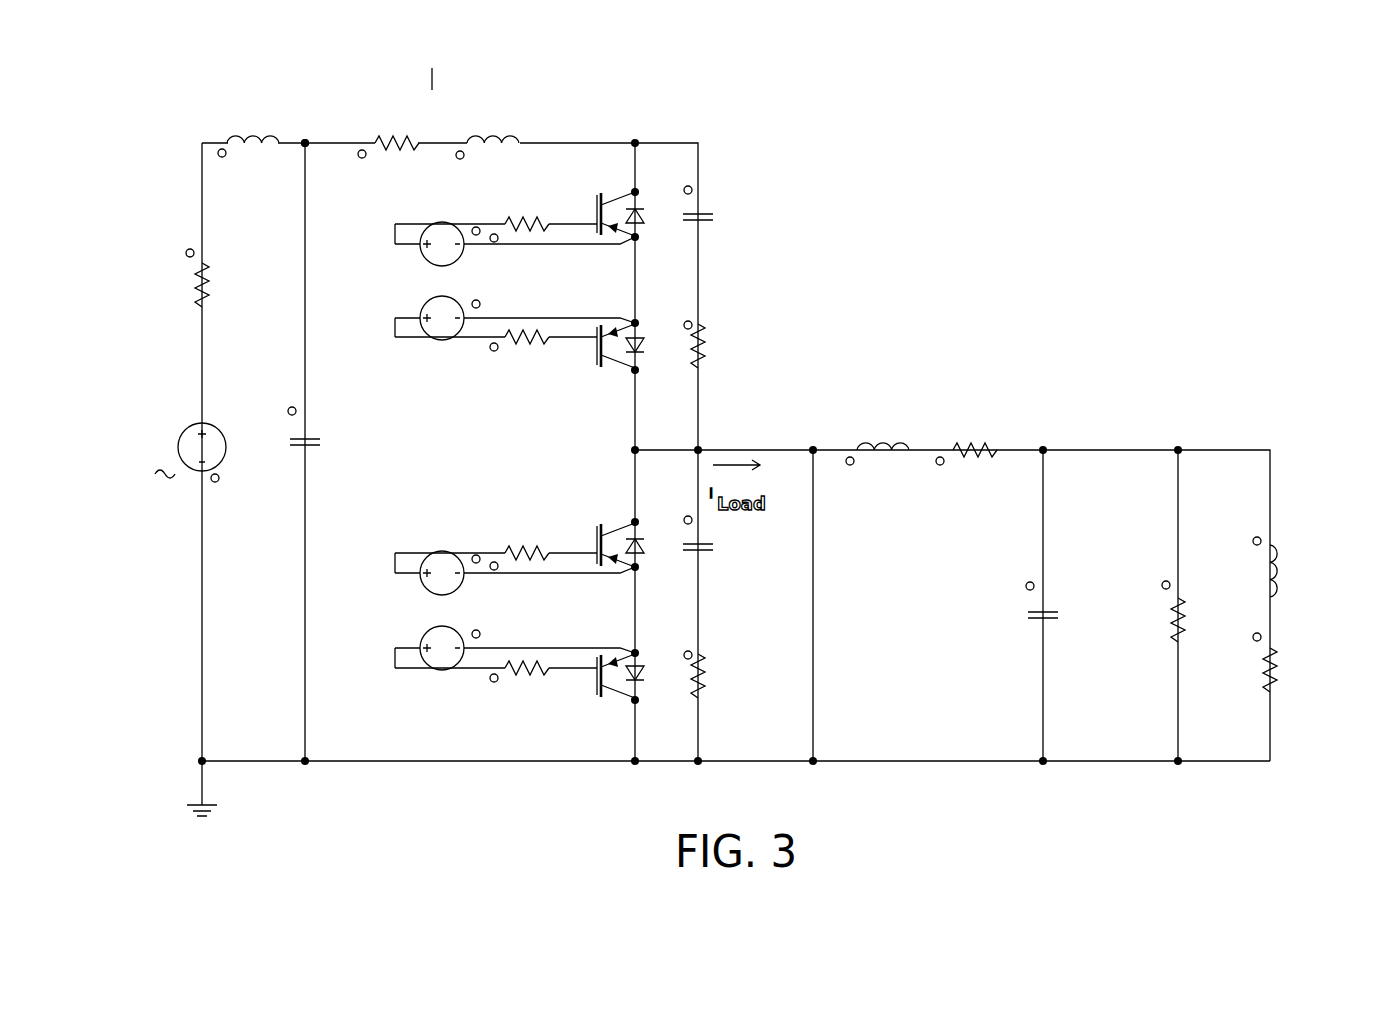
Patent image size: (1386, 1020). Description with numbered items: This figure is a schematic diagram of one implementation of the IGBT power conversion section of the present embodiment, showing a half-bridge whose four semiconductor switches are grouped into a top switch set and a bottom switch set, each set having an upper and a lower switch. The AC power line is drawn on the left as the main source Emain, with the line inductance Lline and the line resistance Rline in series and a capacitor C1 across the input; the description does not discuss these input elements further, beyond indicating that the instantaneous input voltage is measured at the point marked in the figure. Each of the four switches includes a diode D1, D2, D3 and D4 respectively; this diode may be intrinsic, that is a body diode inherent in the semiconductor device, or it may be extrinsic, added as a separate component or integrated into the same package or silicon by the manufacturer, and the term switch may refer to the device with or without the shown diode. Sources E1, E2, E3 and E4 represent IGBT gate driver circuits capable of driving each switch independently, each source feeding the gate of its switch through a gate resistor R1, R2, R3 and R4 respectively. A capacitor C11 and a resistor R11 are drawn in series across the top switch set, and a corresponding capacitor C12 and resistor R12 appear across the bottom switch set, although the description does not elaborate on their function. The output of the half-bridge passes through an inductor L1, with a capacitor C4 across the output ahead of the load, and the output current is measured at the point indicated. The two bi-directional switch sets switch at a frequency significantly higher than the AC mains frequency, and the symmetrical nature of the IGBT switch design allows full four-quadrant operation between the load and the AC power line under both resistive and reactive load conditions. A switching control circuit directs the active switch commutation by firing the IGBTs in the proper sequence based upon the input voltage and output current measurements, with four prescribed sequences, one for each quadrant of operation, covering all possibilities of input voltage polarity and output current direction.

The line inductor Lline is at (252, 119).
The line resistor Rline is at (238, 277).
The main AC voltage source Emain is at (173, 476).
The input capacitor C1 is at (301, 440).
The gate driver source E1 is at (498, 244).
The gate resistor 1 R1 is at (534, 235).
The diode D1 is at (650, 211).
The snubber capacitor C11 is at (720, 210).
The gate driver source E2 is at (498, 318).
The gate resistor 2 R2 is at (534, 337).
The diode D2 is at (650, 334).
The snubber resistor R11 is at (735, 345).
The gate driver source E3 is at (498, 573).
The gate resistor 3 R3 is at (534, 563).
The diode D3 is at (650, 535).
The snubber capacitor C12 is at (719, 545).
The gate driver source E4 is at (498, 649).
The gate resistor 4 R4 is at (534, 665).
The diode D4 is at (650, 662).
The snubber resistor R12 is at (735, 678).
The output filter inductor L1 is at (877, 452).
The output filter capacitor C4 is at (1027, 613).